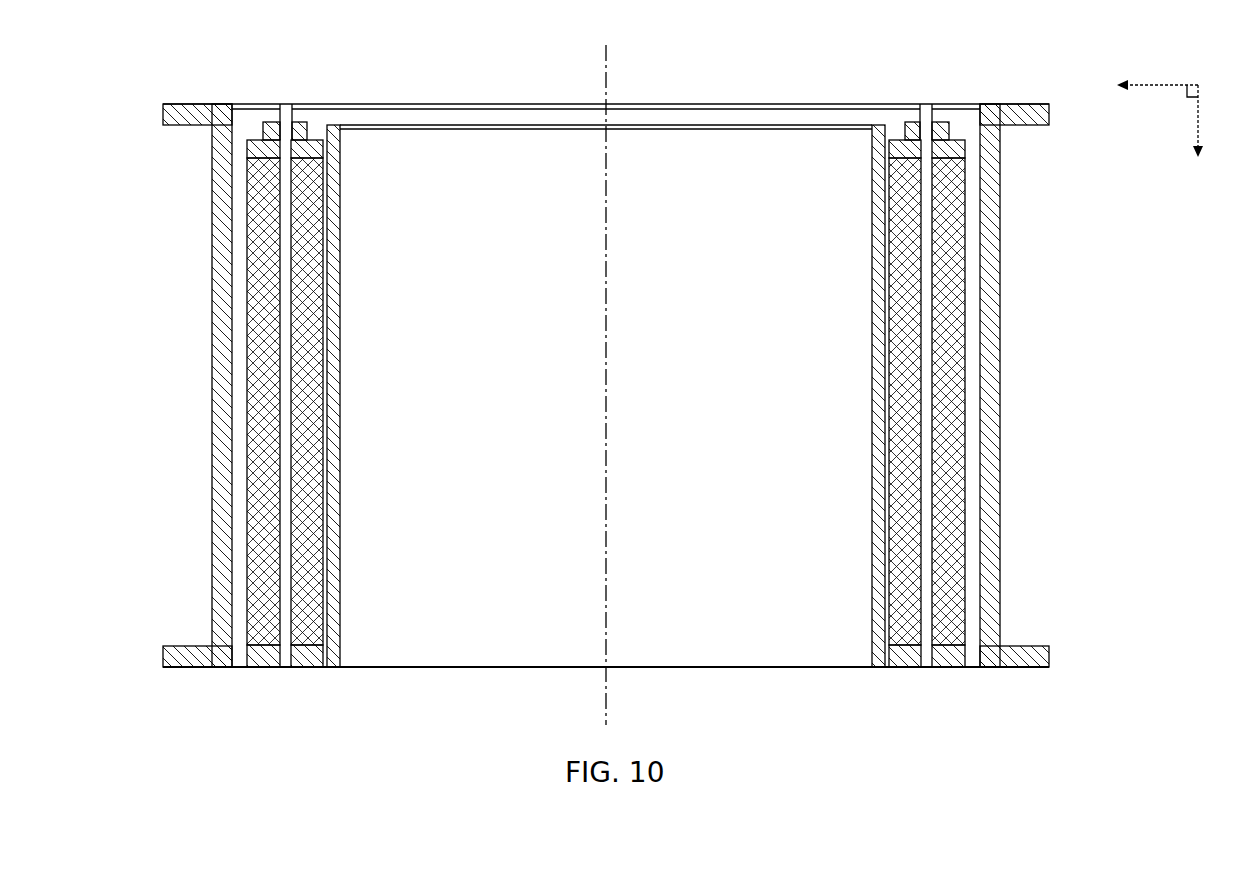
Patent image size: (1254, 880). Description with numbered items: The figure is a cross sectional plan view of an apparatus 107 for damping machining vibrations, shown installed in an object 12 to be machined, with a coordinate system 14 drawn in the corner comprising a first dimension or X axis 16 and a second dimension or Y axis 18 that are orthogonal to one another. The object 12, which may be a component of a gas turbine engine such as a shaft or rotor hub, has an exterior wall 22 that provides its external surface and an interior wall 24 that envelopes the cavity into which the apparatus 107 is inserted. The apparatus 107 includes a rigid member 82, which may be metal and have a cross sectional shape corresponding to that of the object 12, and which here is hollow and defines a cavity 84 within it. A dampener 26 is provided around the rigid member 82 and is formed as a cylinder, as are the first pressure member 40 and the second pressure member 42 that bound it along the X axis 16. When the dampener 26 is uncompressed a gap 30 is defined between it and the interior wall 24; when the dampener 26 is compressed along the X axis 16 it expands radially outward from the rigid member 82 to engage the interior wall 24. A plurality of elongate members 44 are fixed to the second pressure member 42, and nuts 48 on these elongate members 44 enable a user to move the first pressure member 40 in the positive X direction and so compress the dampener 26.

The object 12 is at (212, 180).
The exterior wall 22 is at (1000, 627).
The gap 30 is at (213, 333).
The dampener 26 is at (262, 473).
The interior wall 24 is at (978, 415).
The elongate members 44 is at (287, 577).
The second pressure member 42 is at (260, 665).
The nuts 48 is at (297, 122).
The first pressure member 40 is at (335, 150).
The rigid member 82 is at (332, 667).
The cavity 84 is at (434, 624).
The apparatus 107 is at (449, 692).
The second dimension (Y axis) 18 is at (1173, 84).
The first dimension (X axis) 16 is at (1200, 113).
The coordinate system 14 is at (1170, 123).